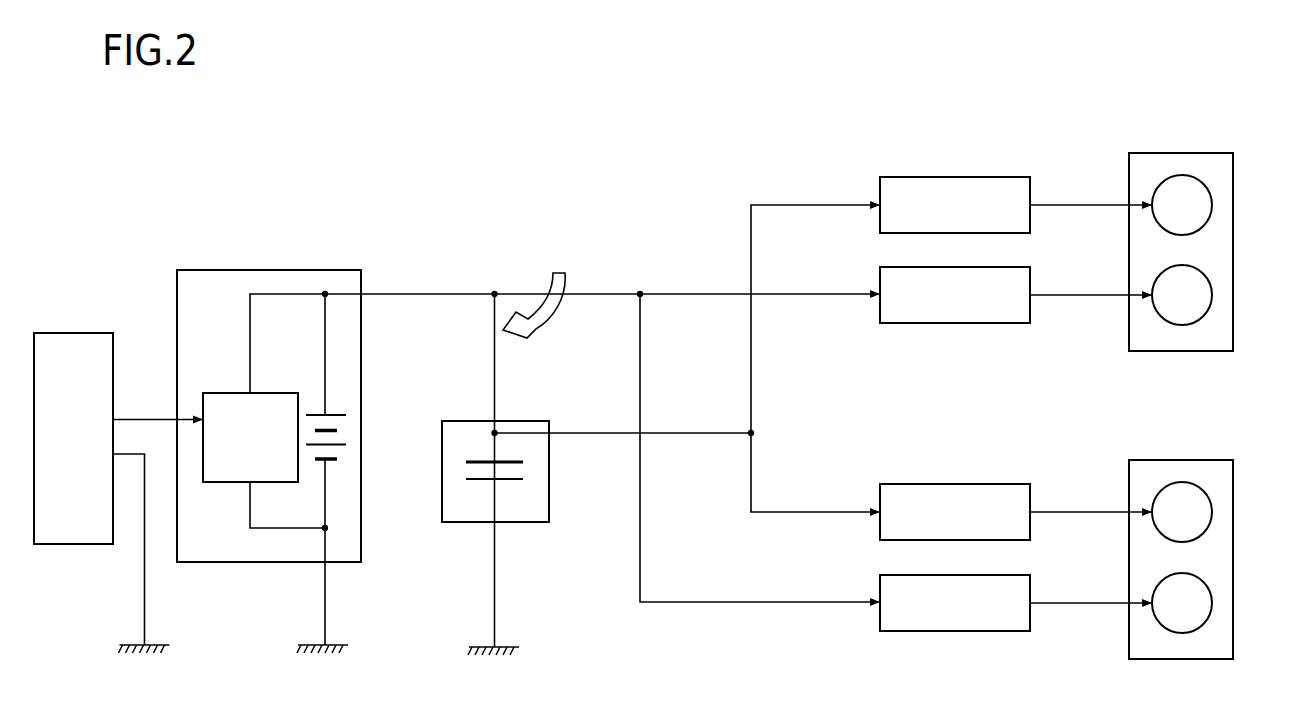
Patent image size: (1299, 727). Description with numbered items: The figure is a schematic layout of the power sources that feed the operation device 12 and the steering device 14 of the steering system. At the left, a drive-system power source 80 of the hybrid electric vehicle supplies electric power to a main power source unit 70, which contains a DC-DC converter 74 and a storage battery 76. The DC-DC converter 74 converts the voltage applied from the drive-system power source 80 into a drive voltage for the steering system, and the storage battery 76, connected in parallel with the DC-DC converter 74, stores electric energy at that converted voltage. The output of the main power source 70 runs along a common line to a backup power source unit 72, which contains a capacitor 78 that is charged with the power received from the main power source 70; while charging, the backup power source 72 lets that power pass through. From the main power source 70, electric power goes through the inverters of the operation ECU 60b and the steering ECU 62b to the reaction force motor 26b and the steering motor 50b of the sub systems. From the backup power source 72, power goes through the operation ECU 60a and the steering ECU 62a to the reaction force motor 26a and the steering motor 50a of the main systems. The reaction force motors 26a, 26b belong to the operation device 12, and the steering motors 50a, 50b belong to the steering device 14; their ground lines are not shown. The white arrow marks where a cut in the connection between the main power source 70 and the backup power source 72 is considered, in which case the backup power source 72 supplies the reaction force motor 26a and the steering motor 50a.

The operation device 12 is at (1225, 172).
The steering device 14 is at (1225, 480).
The reaction force motor 26a is at (1207, 208).
The reaction force motor 26b is at (1207, 298).
The steering motor 50a is at (1207, 515).
The steering motor 50b is at (1207, 606).
The operation ECU 60a is at (1016, 185).
The operation ECU 60b is at (1016, 275).
The steering ECU 62a is at (1016, 494).
The steering ECU 62b is at (1016, 584).
The main power source unit 70 is at (210, 277).
The backup power source unit 72 is at (523, 515).
The DC-DC converter 74 is at (220, 478).
The storage battery 76 is at (337, 472).
The capacitor 78 is at (470, 446).
The drive-system power source 80 is at (56, 536).